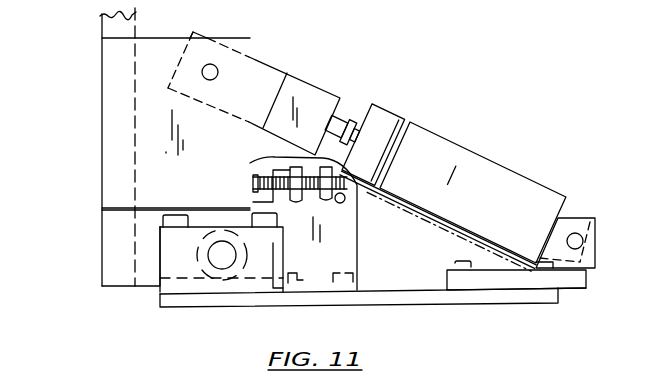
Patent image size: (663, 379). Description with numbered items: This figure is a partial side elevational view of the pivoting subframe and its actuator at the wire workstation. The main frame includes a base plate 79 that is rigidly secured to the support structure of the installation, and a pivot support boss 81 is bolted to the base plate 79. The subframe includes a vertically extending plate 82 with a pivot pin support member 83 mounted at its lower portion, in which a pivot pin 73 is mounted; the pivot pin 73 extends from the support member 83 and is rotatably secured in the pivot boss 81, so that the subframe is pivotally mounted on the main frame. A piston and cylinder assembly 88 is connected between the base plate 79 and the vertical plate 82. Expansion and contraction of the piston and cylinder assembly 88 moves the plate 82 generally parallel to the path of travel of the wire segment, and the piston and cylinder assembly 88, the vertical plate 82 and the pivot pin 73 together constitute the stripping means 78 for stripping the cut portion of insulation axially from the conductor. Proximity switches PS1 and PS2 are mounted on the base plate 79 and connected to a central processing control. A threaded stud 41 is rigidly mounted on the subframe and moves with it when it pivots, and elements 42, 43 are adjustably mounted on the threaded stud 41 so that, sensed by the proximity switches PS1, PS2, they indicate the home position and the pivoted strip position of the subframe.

The vertically extending plate 82 is at (100, 22).
The pivot pin support members 83 is at (249, 37).
The sensed element 43 is at (333, 157).
The piston and cylinder assembly 88 is at (447, 138).
The stripping means 78 is at (521, 162).
The sensed element 42 is at (257, 164).
The threaded stud 41 is at (248, 200).
The proximity switch PS2 is at (345, 198).
The proximity switch PS1 is at (288, 208).
The pivot support boss 81 is at (160, 257).
The pivot pin 73 is at (223, 262).
The base plate 79 is at (160, 297).